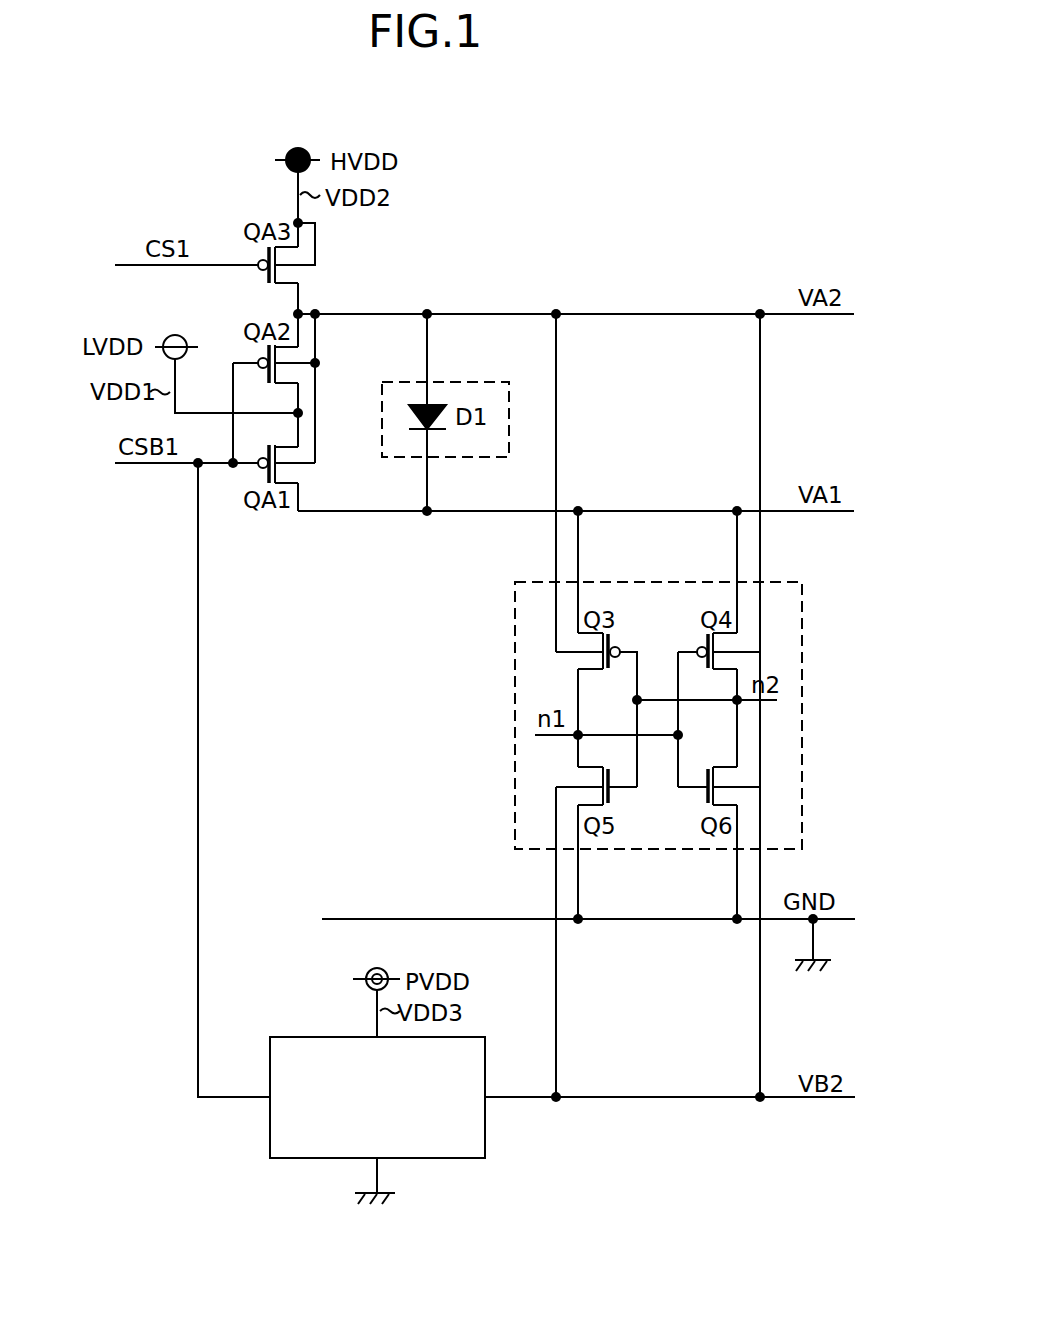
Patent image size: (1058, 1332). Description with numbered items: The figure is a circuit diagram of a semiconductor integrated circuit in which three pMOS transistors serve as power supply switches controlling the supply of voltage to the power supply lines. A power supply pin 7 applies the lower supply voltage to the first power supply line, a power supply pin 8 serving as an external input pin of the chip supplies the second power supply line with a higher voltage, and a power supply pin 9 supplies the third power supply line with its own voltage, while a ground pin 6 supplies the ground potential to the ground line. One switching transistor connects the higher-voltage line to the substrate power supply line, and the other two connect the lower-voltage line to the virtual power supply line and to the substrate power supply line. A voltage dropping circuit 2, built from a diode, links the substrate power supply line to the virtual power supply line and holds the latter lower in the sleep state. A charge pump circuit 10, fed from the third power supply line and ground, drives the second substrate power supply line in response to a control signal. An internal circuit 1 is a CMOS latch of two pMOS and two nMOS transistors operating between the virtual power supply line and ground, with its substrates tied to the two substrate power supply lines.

The internal circuit 1 is at (802, 605).
The voltage dropping circuit 2 is at (488, 381).
The ground pin 6 is at (828, 968).
The power supply pin 7 is at (176, 333).
The power supply pin 8 is at (298, 147).
The power supply pin 9 is at (364, 973).
The charge pump circuit 10 is at (487, 1142).